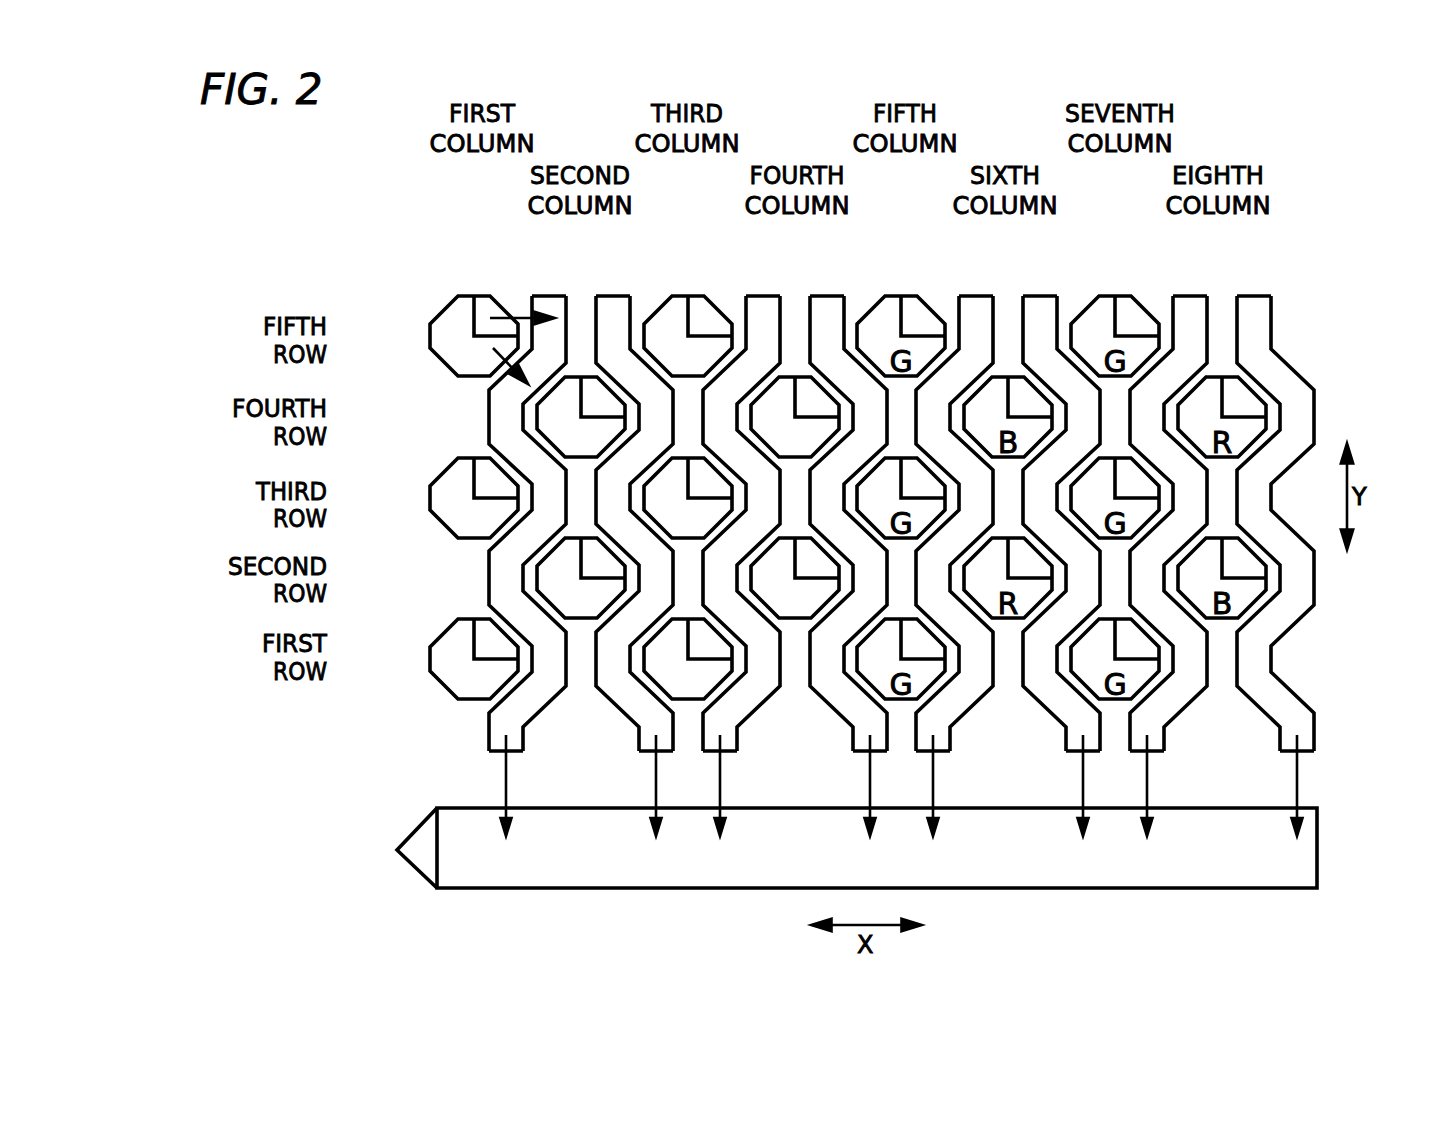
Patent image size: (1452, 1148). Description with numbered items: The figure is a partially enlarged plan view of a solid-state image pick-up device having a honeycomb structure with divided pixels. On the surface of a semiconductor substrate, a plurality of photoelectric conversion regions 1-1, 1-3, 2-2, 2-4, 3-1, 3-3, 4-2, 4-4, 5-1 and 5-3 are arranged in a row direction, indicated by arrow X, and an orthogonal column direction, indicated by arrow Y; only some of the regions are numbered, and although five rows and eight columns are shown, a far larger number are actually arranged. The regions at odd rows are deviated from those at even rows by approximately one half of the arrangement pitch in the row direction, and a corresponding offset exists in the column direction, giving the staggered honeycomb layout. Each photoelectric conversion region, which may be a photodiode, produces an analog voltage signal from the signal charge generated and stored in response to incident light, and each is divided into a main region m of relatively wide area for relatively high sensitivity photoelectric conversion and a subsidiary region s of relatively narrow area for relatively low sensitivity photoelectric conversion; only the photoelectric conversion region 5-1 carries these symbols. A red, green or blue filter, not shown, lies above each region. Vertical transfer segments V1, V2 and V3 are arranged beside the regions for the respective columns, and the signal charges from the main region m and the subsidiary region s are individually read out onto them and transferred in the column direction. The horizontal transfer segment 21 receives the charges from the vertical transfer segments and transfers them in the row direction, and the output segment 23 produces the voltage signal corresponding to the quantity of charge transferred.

The main region m is at (450, 304).
The subsidiary region s is at (495, 301).
The vertical transfer segment V1 is at (551, 296).
The vertical transfer segment V2 is at (614, 296).
The vertical transfer segment V3 is at (761, 296).
The photoelectric conversion region 5-1 is at (452, 323).
The photoelectric conversion region 5-3 is at (665, 298).
The photoelectric conversion region 4-2 is at (537, 407).
The photoelectric conversion region 4-4 is at (769, 390).
The photoelectric conversion region 3-1 is at (442, 524).
The photoelectric conversion region 3-3 is at (661, 534).
The photoelectric conversion region 2-2 is at (536, 577).
The photoelectric conversion region 2-4 is at (824, 605).
The photoelectric conversion region 1-1 is at (442, 685).
The photoelectric conversion region 1-3 is at (664, 697).
The horizontal transfer segment 21 is at (1117, 855).
The output segment 23 is at (425, 852).